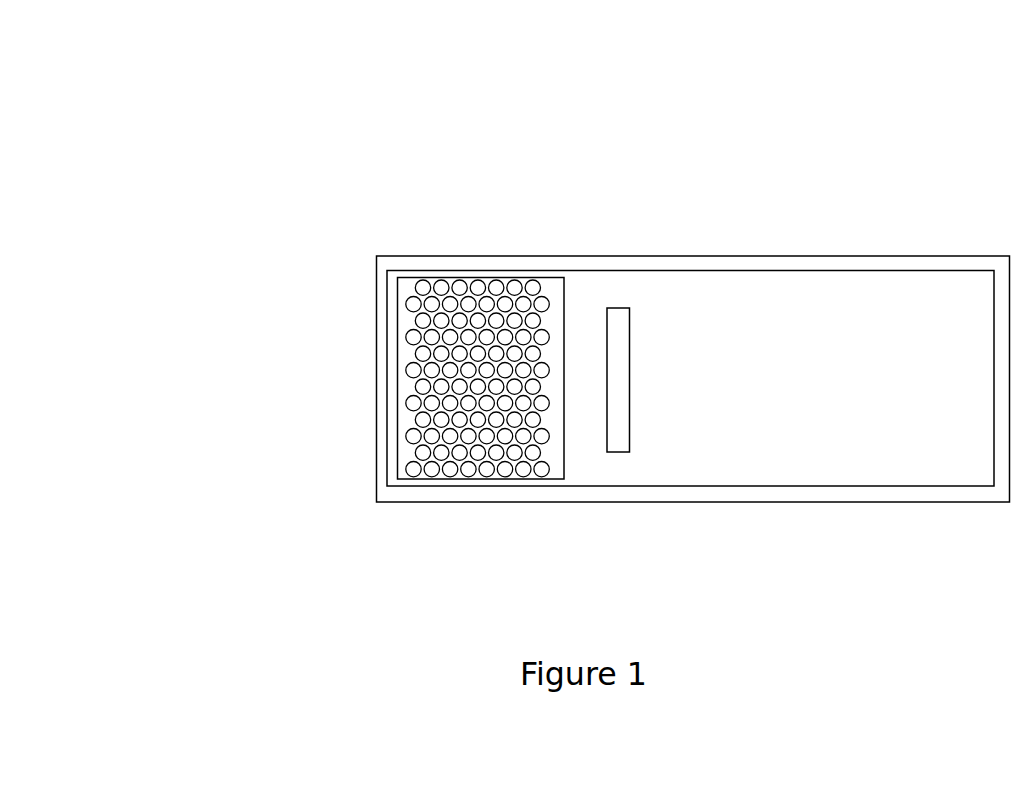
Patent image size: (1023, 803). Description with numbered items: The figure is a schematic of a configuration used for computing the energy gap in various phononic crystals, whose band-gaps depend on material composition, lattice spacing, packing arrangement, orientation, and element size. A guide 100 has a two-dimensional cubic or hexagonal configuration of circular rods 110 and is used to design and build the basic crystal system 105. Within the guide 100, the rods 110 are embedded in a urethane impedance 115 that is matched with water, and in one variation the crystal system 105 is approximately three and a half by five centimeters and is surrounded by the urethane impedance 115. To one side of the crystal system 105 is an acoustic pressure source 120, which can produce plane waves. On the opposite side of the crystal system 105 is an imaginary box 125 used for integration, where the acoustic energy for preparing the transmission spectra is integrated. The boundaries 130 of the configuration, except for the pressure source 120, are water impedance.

The guide 100 is at (278, 149).
The crystal system 105 is at (410, 274).
The circular rods 110 is at (477, 280).
The urethane impedance 115 is at (549, 292).
The acoustic pressure source 120 is at (388, 318).
The imaginary box 125 is at (638, 389).
The boundaries 130 is at (881, 272).